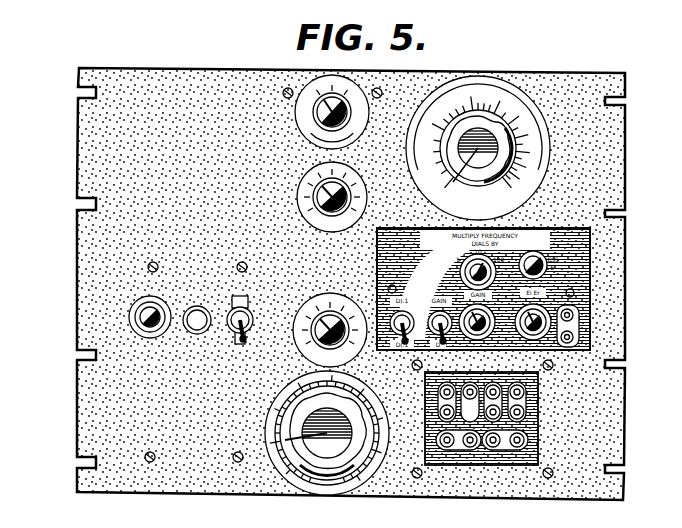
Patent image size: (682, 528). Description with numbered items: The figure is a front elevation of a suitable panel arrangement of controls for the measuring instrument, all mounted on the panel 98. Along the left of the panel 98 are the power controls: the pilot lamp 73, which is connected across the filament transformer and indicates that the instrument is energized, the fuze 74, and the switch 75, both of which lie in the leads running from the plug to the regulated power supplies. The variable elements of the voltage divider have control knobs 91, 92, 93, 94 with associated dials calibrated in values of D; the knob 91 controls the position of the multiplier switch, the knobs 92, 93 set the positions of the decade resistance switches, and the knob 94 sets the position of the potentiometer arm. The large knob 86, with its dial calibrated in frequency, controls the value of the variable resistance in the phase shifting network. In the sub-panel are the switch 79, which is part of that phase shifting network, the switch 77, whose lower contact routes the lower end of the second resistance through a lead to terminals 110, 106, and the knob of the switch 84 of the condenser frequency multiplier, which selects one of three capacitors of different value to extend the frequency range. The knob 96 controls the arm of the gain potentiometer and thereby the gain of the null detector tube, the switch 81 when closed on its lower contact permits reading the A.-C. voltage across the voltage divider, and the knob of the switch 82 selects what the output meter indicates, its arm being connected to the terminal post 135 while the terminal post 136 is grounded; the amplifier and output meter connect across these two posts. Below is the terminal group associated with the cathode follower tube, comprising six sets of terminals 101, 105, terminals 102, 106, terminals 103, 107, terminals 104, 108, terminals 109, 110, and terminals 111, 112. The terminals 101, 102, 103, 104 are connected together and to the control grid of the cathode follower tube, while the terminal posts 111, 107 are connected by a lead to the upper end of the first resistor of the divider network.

The pilot lamp 73 is at (129, 317).
The fuze 74 is at (197, 334).
The switch 75 is at (239, 300).
The switch 77 is at (440, 310).
The switch 79 is at (402, 310).
The switch 81 is at (540, 253).
The switch 82 is at (546, 337).
The switch 84 is at (488, 256).
The knob 86 is at (518, 96).
The knob 91 is at (301, 82).
The knob 92 is at (297, 203).
The knob 93 is at (309, 302).
The knob 94 is at (283, 463).
The knob 96 is at (478, 340).
The panel 98 is at (80, 146).
The terminal 101 is at (425, 392).
The terminal 102 is at (470, 386).
The terminal 103 is at (494, 388).
The terminal 104 is at (522, 393).
The terminal 105 is at (442, 411).
The terminal 106 is at (447, 398).
The terminal post 107 is at (521, 418).
The terminal 108 is at (500, 413).
The terminal 109 is at (440, 444).
The terminal 110 is at (470, 447).
The terminal post 111 is at (493, 447).
The terminal 112 is at (517, 447).
The terminal post 135 is at (573, 312).
The terminal post 136 is at (592, 347).